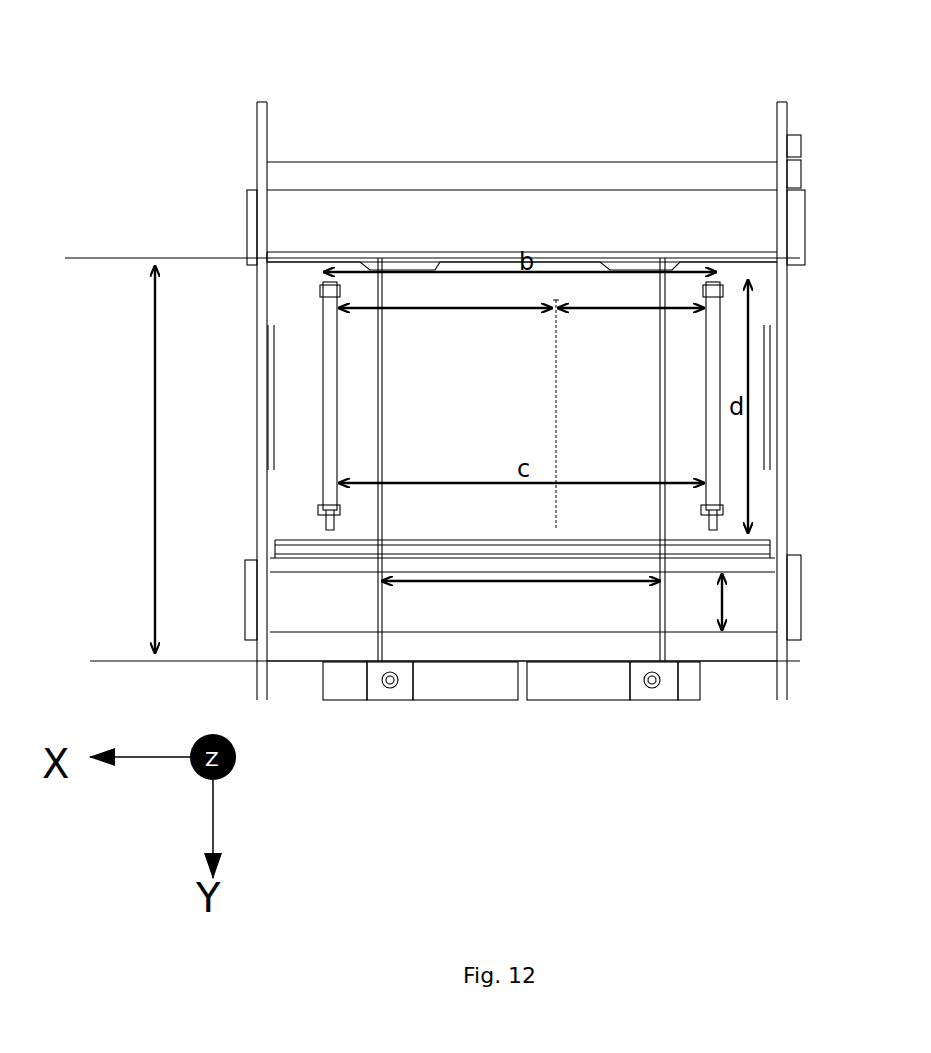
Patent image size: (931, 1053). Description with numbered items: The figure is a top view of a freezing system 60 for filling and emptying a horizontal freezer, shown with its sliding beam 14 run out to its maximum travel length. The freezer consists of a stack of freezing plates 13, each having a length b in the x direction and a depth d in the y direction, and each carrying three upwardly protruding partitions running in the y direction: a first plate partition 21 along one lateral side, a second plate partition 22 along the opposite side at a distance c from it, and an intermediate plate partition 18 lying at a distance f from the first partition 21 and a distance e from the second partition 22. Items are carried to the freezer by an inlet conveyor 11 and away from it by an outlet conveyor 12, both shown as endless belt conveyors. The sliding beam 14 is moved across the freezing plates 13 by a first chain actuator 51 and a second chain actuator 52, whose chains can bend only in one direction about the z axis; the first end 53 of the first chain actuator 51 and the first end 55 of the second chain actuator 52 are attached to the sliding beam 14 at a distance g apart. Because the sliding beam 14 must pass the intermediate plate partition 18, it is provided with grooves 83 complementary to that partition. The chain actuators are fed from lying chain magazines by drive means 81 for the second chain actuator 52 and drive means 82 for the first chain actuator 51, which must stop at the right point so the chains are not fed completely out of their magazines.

The freezing system 60 is at (540, 46).
The inlet conveyor 11 is at (523, 586).
The outlet conveyor 12 is at (522, 243).
The freezing plates 13 is at (521, 314).
The sliding beam 14 is at (590, 262).
The intermediate plate partition 18 is at (557, 384).
The first plate partition 21 is at (702, 443).
The second plate partition 22 is at (338, 392).
The first chain actuator 51 is at (665, 527).
The second chain actuator 52 is at (376, 527).
The first end of the first chain actuator 53 is at (703, 412).
The first end of the second chain actuator 55 is at (376, 430).
The drive means of the second chain actuator 81 is at (386, 684).
The drive means of the first chain actuator 82 is at (654, 684).
The grooves in the sliding beam 83 is at (556, 432).